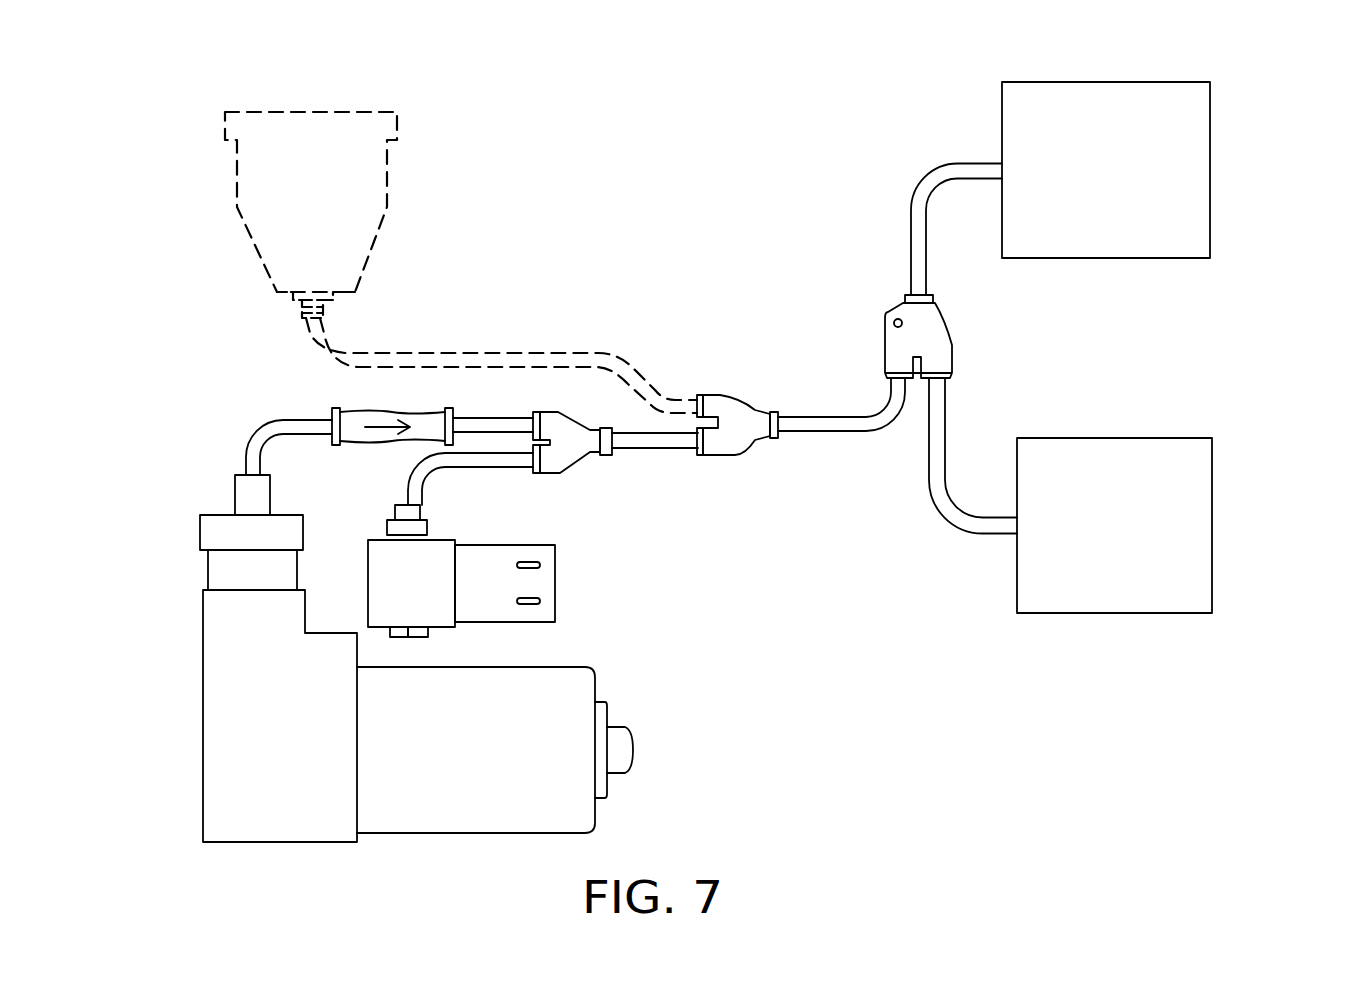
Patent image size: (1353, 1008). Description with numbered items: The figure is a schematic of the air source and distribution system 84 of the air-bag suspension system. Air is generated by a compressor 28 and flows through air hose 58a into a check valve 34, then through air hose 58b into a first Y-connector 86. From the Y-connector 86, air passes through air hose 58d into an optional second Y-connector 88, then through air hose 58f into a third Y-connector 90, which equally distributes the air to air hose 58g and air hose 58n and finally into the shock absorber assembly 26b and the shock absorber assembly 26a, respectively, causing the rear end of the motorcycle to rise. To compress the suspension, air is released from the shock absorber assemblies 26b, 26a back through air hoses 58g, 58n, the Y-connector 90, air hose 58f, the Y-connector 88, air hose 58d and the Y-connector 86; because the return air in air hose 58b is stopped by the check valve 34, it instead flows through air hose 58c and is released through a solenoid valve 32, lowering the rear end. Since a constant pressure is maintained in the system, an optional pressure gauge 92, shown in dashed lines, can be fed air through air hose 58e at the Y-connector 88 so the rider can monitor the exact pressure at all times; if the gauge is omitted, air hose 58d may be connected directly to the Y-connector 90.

The air source and distribution system 84 is at (677, 96).
The pressure gauge 92 is at (365, 190).
The air hose 58e is at (640, 392).
The check valve 34 is at (342, 408).
The air hose 58a is at (270, 425).
The compressor 28 is at (303, 734).
The air hose 58b is at (485, 415).
The air hose 58c is at (480, 465).
The solenoid valve 32 is at (440, 585).
The Y-connector 86 is at (592, 455).
The air hose 58d is at (658, 458).
The Y-connector 88 is at (745, 450).
The air hose 58f is at (832, 435).
The Y-connector 90 is at (885, 337).
The air hose 58g is at (923, 177).
The air hose 58n is at (948, 422).
The shock absorber assembly 26b is at (1213, 148).
The shock absorber assembly 26a is at (1213, 495).